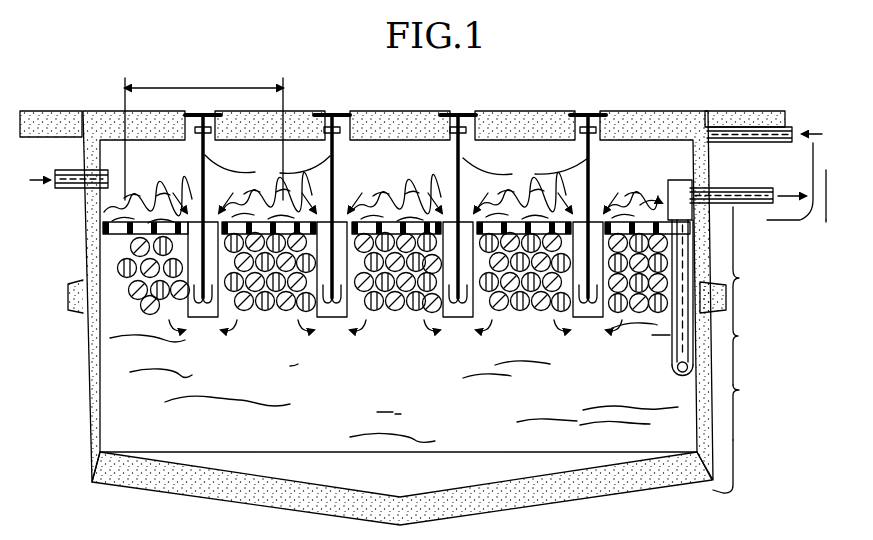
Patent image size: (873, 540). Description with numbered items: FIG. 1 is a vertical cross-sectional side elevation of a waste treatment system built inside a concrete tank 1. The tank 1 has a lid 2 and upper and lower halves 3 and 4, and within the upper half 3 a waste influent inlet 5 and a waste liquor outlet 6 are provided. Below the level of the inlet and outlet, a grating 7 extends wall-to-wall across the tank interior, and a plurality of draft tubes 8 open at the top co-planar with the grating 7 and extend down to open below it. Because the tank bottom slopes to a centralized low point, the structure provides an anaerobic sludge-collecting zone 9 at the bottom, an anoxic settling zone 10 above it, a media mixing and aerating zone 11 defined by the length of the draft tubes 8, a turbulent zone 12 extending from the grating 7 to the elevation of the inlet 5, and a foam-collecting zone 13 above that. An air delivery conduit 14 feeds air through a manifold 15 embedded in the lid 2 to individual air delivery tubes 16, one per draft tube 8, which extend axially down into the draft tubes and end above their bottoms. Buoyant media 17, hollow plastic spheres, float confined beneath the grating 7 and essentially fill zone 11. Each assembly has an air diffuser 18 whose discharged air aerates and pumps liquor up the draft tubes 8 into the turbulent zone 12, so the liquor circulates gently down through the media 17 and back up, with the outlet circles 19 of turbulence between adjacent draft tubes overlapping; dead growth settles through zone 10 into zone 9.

The concrete tank 1 is at (72, 348).
The lid 2 is at (228, 114).
The upper half 3 is at (82, 240).
The lower half 4 is at (90, 426).
The waste influent inlet 5 is at (62, 190).
The waste liquor outlet 6 is at (748, 188).
The grating 7 is at (668, 200).
The draft tubes 8 is at (206, 320).
The anaerobic sludge-collecting zone 9 is at (733, 480).
The anoxic settling zone 10 is at (739, 391).
The media mixing and aerating zone 11 is at (733, 278).
The turbulent zone 12 is at (825, 222).
The foam-collecting zone 13 is at (818, 165).
The air delivery conduit 14 is at (722, 126).
The manifold 15 is at (529, 110).
The air delivery tubes 16 is at (396, 170).
The buoyant media 17 is at (147, 306).
The air diffuser 18 is at (199, 332).
The outlet circles 19 is at (196, 88).